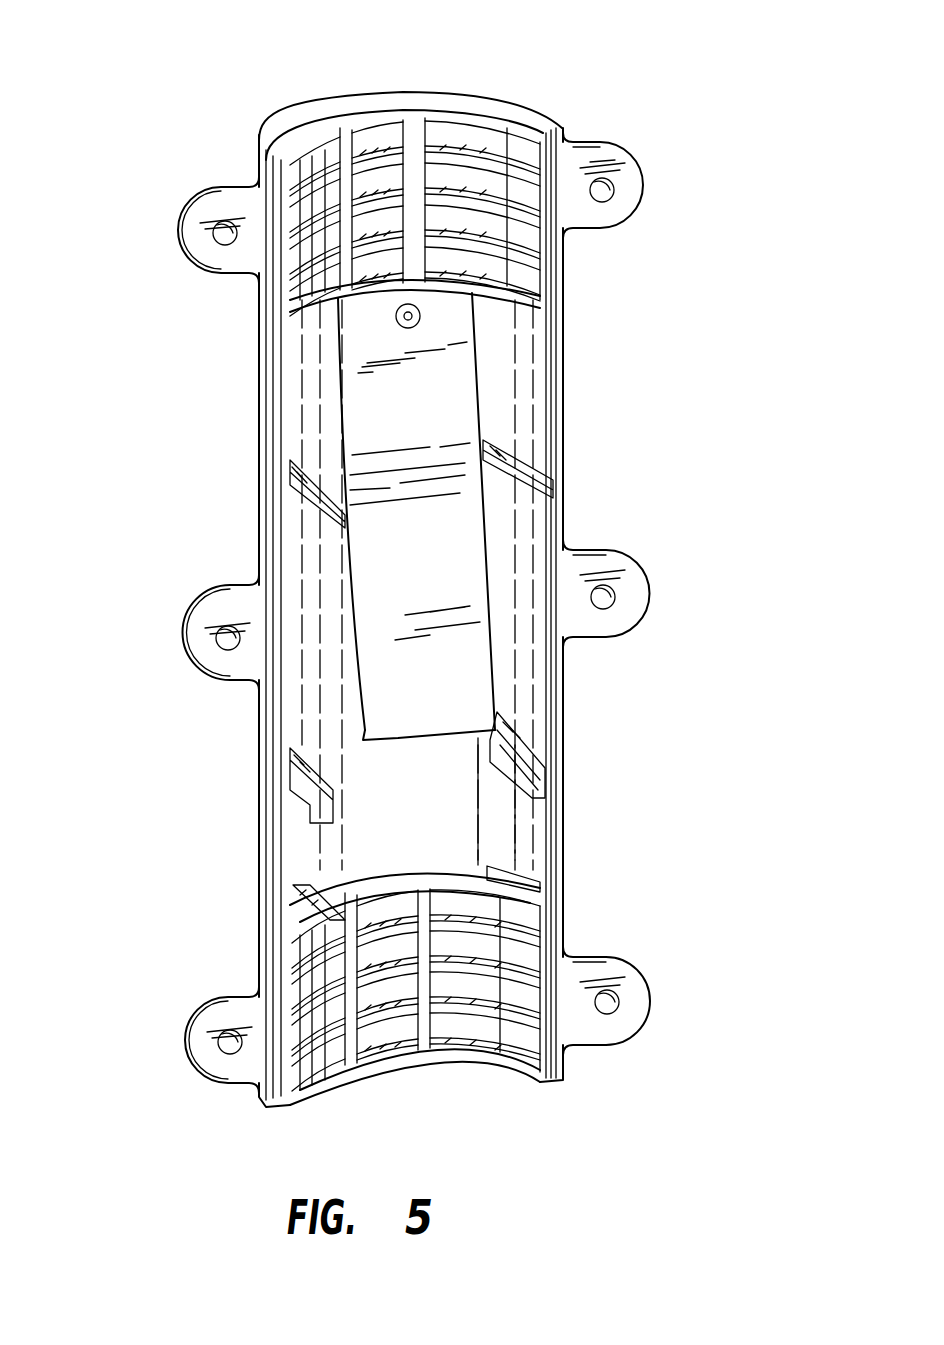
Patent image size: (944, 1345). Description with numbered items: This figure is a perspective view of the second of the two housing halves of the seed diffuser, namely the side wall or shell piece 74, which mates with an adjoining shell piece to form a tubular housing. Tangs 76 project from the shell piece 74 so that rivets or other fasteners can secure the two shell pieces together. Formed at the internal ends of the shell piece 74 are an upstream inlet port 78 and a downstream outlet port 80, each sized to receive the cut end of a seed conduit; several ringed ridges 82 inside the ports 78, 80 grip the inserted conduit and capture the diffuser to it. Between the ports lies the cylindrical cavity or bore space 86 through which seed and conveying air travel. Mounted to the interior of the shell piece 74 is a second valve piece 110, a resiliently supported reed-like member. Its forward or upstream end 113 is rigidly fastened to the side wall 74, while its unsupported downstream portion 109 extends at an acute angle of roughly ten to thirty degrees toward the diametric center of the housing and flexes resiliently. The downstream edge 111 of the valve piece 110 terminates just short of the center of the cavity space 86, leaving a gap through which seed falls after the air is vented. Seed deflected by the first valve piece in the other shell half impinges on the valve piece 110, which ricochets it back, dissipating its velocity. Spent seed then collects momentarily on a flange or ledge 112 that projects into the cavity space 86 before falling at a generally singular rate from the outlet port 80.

The shell piece 74 is at (563, 368).
The tangs 76 is at (640, 167).
The upstream inlet port 78 is at (415, 113).
The downstream outlet port 80 is at (443, 1057).
The ringed ridges 82 is at (292, 205).
The cavity space 86 is at (457, 827).
The downstream portion 109 is at (477, 693).
The second valve piece 110 is at (452, 552).
The downstream edge 111 is at (358, 730).
The ledge 112 is at (350, 882).
The upstream end 113 is at (377, 407).